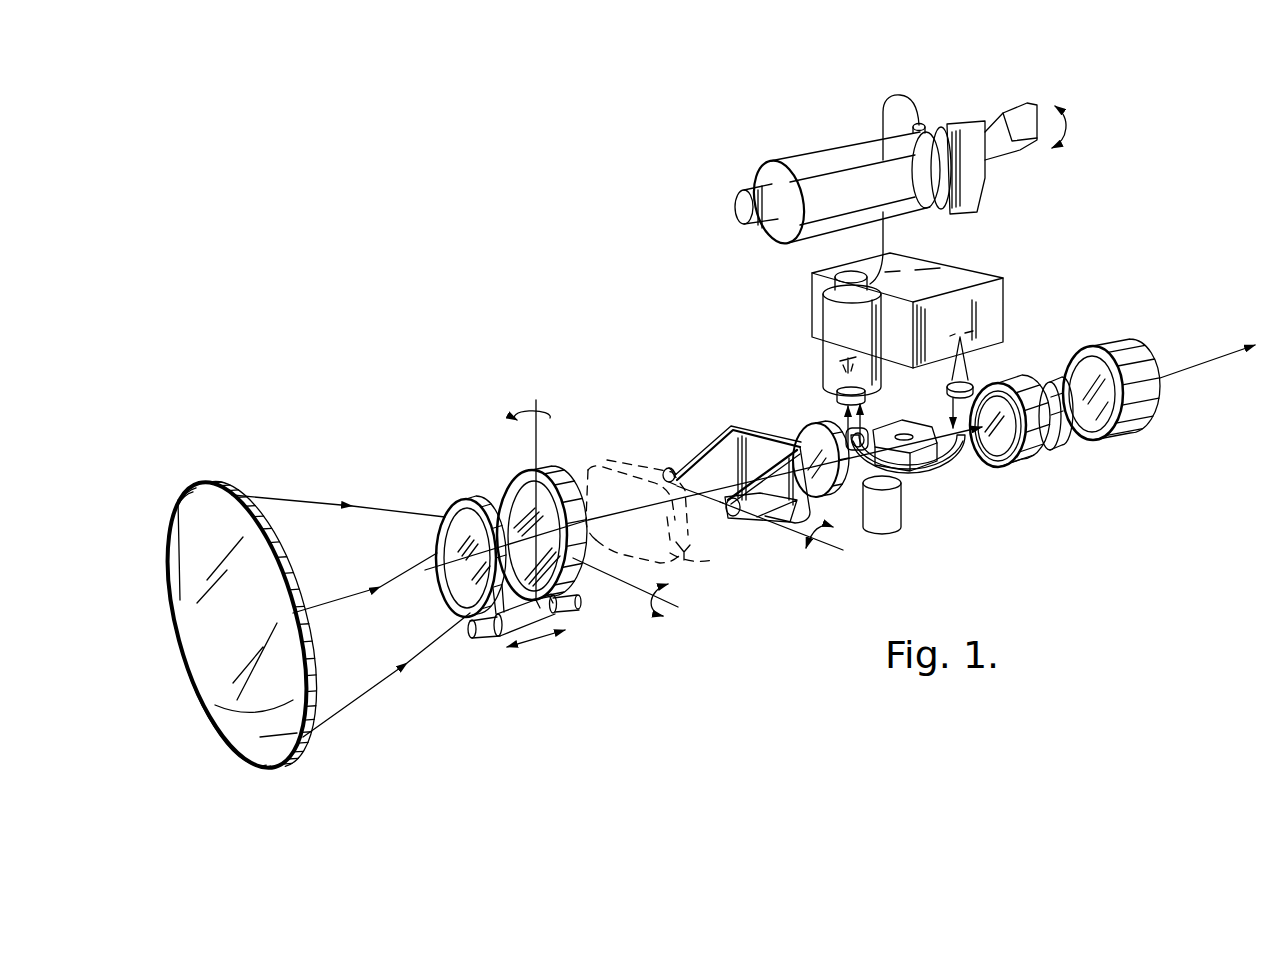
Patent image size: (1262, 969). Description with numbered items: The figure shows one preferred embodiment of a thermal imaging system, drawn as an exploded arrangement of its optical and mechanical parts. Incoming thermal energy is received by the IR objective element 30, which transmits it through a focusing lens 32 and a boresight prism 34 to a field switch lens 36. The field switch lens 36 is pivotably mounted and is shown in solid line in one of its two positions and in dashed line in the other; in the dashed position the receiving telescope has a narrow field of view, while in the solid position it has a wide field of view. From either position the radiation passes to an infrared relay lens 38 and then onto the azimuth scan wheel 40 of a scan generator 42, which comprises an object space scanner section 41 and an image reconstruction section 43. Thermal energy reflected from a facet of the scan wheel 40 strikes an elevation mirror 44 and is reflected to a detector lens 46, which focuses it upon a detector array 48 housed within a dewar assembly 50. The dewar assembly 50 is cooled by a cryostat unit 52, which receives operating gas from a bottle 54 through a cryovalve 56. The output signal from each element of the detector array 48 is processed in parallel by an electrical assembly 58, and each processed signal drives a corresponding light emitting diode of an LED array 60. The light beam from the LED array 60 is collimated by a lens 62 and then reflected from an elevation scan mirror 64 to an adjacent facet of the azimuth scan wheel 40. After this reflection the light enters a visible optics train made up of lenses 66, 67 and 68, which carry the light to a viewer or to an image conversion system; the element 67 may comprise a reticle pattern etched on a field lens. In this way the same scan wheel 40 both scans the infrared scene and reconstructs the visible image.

The IR objective element 30 is at (282, 762).
The focusing lens 32 is at (447, 507).
The boresight prism 34 is at (515, 477).
The field switch lens 36 is at (788, 527).
The infrared relay lens 38 is at (803, 428).
The azimuth scan wheel 40 is at (927, 454).
The object space scanner section 41 is at (853, 478).
The scan generator 42 is at (914, 534).
The image reconstruction section 43 is at (947, 478).
The elevation mirror 44 is at (855, 430).
The detector lens 46 is at (838, 393).
The detector array 48 is at (832, 366).
The dewar assembly 50 is at (833, 321).
The cryostat unit 52 is at (836, 284).
The bottle 54 is at (823, 157).
The cryovalve 56 is at (965, 121).
The electrical assembly 58 is at (995, 302).
The LED array 60 is at (985, 331).
The lens 62 is at (950, 388).
The elevation scan mirror 64 is at (969, 445).
The lens 66 is at (1000, 385).
The lens 67 is at (1058, 434).
The lens 68 is at (1120, 343).